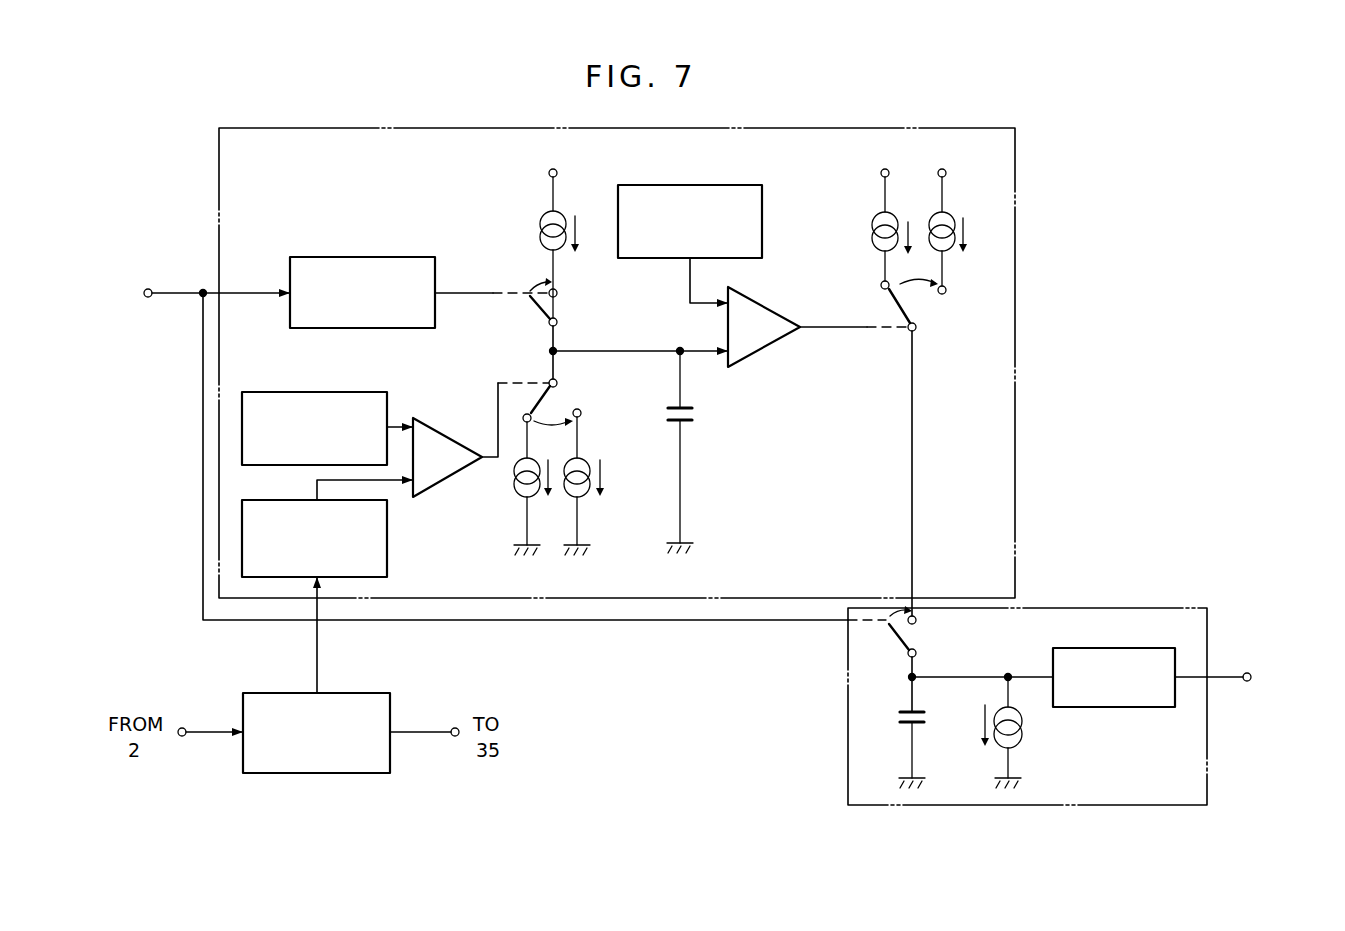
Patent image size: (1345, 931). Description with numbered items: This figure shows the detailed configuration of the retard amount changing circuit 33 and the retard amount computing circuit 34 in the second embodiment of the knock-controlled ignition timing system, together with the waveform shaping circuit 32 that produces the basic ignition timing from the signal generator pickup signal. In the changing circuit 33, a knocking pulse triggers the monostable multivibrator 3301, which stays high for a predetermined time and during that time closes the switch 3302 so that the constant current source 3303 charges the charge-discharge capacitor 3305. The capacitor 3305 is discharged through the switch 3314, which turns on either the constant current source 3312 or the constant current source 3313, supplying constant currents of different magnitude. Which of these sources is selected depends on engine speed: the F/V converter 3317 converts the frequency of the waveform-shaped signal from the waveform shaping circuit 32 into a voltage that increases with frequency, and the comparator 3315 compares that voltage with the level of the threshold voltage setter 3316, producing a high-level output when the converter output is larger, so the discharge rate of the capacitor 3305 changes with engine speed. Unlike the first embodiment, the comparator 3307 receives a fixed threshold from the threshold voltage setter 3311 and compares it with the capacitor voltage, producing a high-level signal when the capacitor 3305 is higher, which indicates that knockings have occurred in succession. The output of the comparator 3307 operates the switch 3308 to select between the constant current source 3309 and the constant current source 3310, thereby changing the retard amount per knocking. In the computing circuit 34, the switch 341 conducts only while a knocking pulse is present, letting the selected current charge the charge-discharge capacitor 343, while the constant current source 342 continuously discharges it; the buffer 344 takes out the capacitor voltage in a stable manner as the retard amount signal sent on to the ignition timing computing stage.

The retard amount changing circuit 33 is at (948, 128).
The retard amount computing circuit 34 is at (1140, 608).
The waveform shaping circuit 32 is at (390, 712).
The monostable multivibrator 3301 is at (350, 257).
The switch 3302 is at (558, 302).
The constant current source 3303 is at (541, 228).
The charge-discharge capacitor 3305 is at (694, 414).
The comparator 3307 is at (758, 302).
The switch 3308 is at (921, 297).
The constant current source 3309 is at (876, 216).
The constant current source 3310 is at (950, 214).
The threshold voltage setter 3311 is at (683, 185).
The constant current source 3312 is at (514, 488).
The constant current source 3313 is at (590, 459).
The switch 3314 is at (557, 401).
The comparator 3315 is at (455, 410).
The threshold voltage setter 3316 is at (370, 390).
The F/V converter 3317 is at (387, 540).
The switch 341 is at (918, 637).
The constant current source 342 is at (1022, 722).
The charge-discharge capacitor 343 is at (900, 712).
The buffer 344 is at (1118, 648).